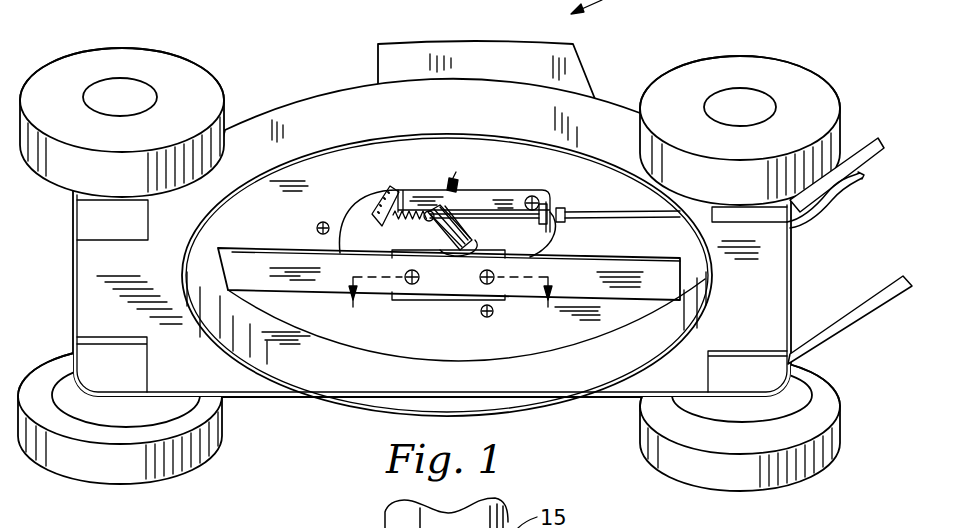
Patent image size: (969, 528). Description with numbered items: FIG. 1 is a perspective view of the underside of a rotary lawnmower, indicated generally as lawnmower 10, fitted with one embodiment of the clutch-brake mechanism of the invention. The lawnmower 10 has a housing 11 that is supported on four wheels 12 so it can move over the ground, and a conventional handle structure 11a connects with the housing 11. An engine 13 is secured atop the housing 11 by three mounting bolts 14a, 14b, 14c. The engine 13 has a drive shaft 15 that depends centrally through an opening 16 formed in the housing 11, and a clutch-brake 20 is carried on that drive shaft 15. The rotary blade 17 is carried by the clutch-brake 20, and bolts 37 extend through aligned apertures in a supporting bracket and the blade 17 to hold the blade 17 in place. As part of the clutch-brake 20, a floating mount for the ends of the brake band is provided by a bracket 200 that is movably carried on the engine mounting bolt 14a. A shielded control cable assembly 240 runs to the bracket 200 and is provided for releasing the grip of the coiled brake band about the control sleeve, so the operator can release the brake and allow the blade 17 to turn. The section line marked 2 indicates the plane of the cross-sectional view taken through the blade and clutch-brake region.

The rotary lawnmower 10 is at (598, 7).
The housing 11 is at (280, 117).
The handle structure 11a is at (843, 318).
The wheels 12 is at (163, 70).
The engine 13 is at (398, 53).
The mounting bolt 14a is at (543, 210).
The mounting bolt 14b is at (315, 230).
The mounting bolt 14c is at (489, 316).
The drive shaft 15 is at (455, 182).
The opening 16 is at (378, 196).
The rotary blade 17 is at (582, 284).
The clutch-brake 20 is at (408, 235).
The bolts 37 is at (483, 287).
The bracket 200 is at (472, 195).
The control cable assembly 240 is at (827, 197).
The section line 2- 2 is at (448, 303).